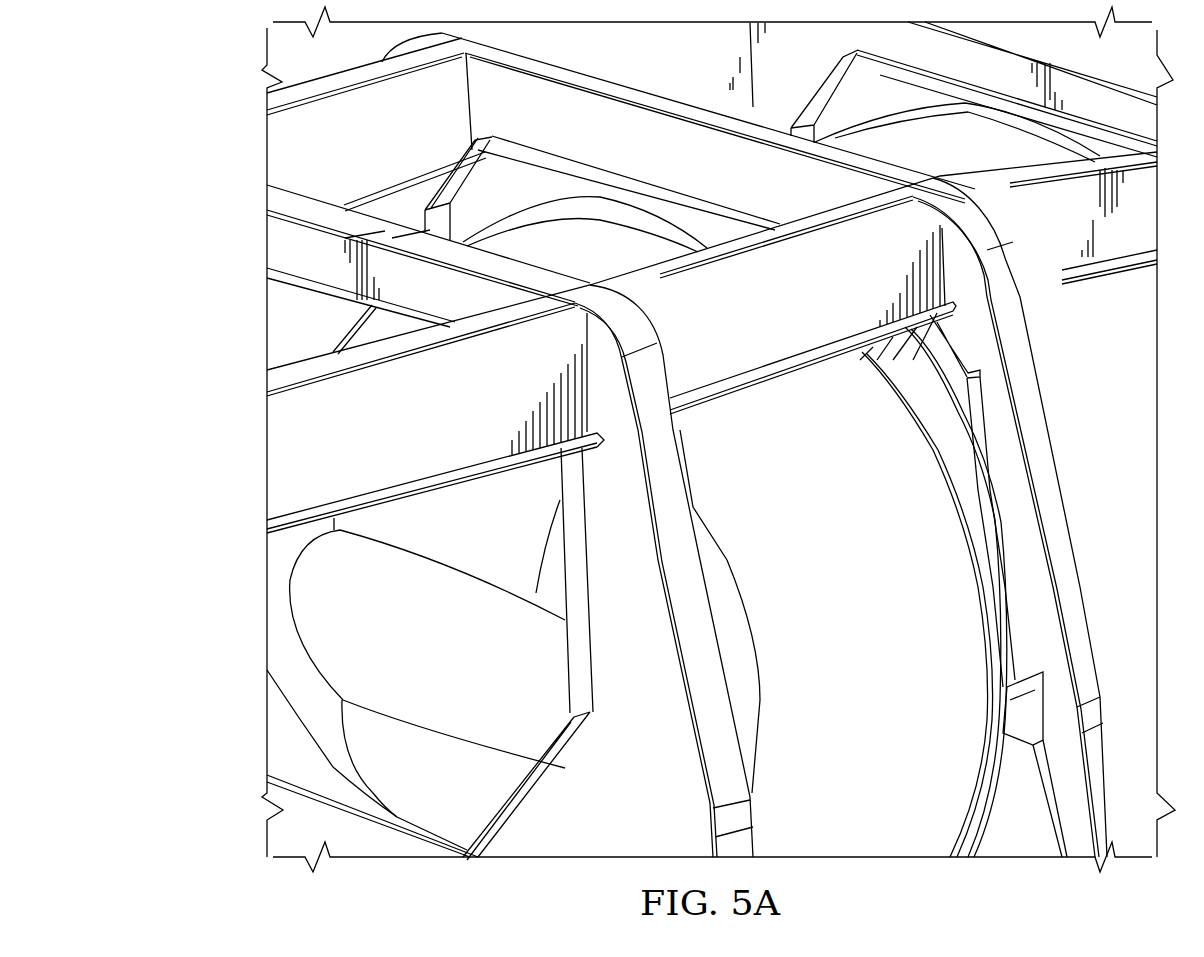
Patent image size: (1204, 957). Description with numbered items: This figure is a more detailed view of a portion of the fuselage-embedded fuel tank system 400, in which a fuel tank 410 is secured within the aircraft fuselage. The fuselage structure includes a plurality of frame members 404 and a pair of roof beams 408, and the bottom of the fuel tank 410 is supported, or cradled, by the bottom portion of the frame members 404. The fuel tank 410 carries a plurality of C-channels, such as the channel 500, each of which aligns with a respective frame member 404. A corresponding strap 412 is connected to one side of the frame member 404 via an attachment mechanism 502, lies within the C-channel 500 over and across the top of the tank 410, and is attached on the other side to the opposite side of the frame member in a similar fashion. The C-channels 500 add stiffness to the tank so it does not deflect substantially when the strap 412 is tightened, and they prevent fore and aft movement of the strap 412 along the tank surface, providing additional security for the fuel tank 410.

The fuselage-embedded fuel tank system 400 is at (248, 146).
The frame member 404 is at (600, 750).
The roof beam 408 is at (452, 123).
The fuel tank 410 is at (1121, 389).
The strap 412 is at (953, 422).
The C-channel 500 is at (893, 387).
The attachment mechanism 502 is at (979, 717).